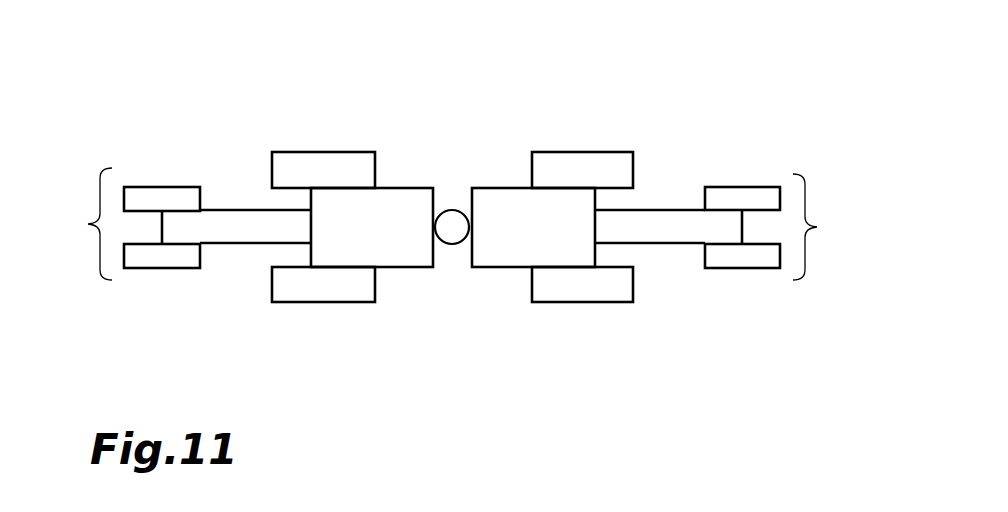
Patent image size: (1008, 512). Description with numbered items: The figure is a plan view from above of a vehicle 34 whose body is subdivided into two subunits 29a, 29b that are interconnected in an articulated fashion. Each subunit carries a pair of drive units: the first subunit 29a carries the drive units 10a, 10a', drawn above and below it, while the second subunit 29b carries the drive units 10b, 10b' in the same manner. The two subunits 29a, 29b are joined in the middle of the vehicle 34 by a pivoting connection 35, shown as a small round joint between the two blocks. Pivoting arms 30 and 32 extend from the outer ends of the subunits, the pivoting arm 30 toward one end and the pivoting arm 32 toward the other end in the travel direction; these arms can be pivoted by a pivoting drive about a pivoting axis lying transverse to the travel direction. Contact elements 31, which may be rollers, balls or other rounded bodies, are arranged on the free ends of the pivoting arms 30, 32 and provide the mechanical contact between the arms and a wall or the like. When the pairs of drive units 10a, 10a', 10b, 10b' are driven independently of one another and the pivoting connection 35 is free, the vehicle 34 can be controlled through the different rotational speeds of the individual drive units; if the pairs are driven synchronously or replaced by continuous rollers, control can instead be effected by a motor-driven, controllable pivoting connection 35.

The pivoting arm 30 is at (235, 222).
The pivoting arm 32 is at (668, 222).
The contact element 31 is at (455, 224).
The subunit 29a is at (411, 198).
The subunit 29b is at (497, 208).
The drive unit 10a is at (315, 322).
The drive unit 10a' is at (316, 116).
The drive unit 10b is at (582, 322).
The drive unit 10b' is at (604, 116).
The pivoting connection 35 is at (452, 227).
The vehicle 34 is at (712, 334).